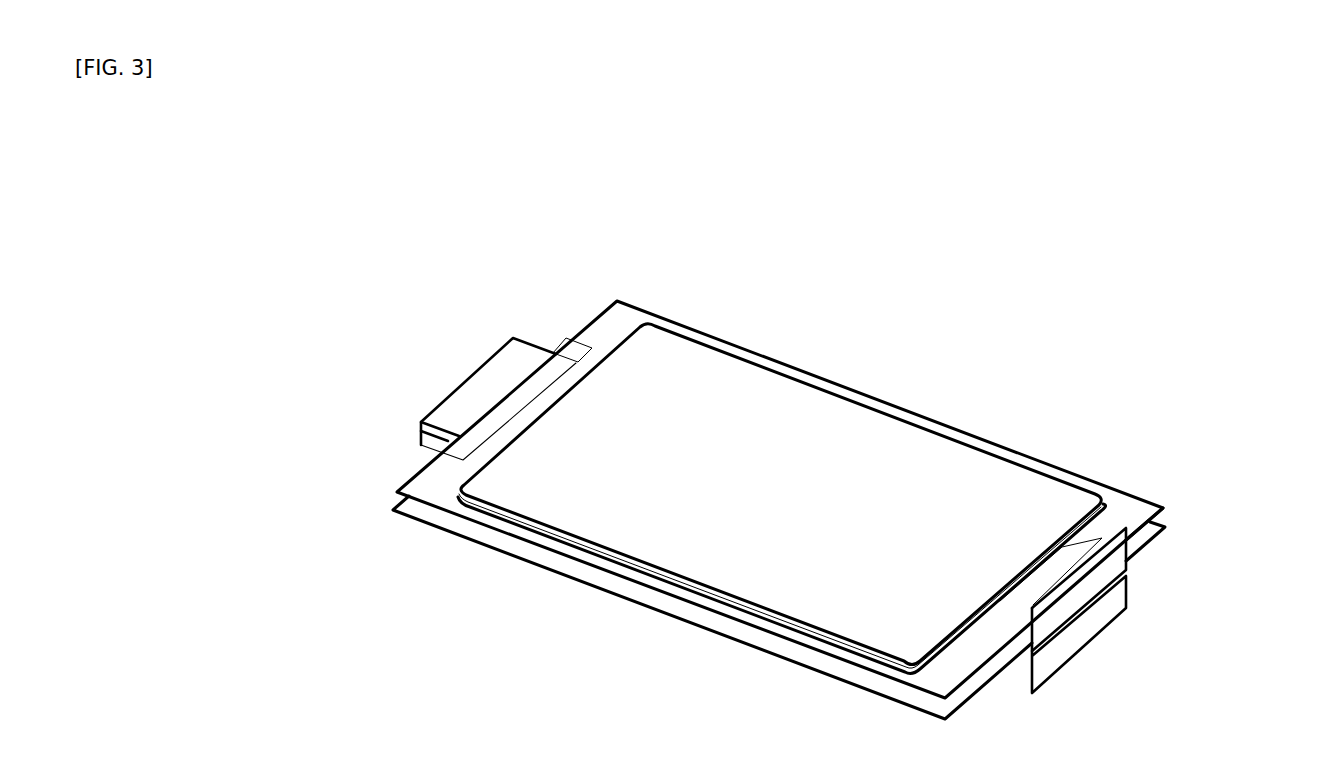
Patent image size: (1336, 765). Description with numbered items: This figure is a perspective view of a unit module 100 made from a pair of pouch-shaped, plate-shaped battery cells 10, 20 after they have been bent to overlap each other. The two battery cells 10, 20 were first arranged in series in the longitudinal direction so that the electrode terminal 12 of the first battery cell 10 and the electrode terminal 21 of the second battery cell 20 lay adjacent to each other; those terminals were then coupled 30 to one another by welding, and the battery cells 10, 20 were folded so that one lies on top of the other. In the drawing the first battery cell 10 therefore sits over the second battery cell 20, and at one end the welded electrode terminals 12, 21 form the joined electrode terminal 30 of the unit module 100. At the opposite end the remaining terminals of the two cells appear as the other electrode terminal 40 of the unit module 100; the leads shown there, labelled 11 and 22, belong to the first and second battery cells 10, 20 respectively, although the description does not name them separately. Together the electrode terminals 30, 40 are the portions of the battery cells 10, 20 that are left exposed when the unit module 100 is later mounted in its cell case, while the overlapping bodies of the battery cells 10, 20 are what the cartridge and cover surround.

The unit module 100 is at (380, 282).
The battery cell 10 is at (815, 362).
The first electrode tab (right) 11 is at (1115, 563).
The electrode terminal 12 is at (480, 385).
The battery cell 20 is at (622, 614).
The electrode terminal 21 is at (442, 452).
The second connection lead (right, bent) 22 is at (1115, 613).
The coupled electrode terminals 30 is at (425, 396).
The electrode terminal 40 is at (1159, 610).